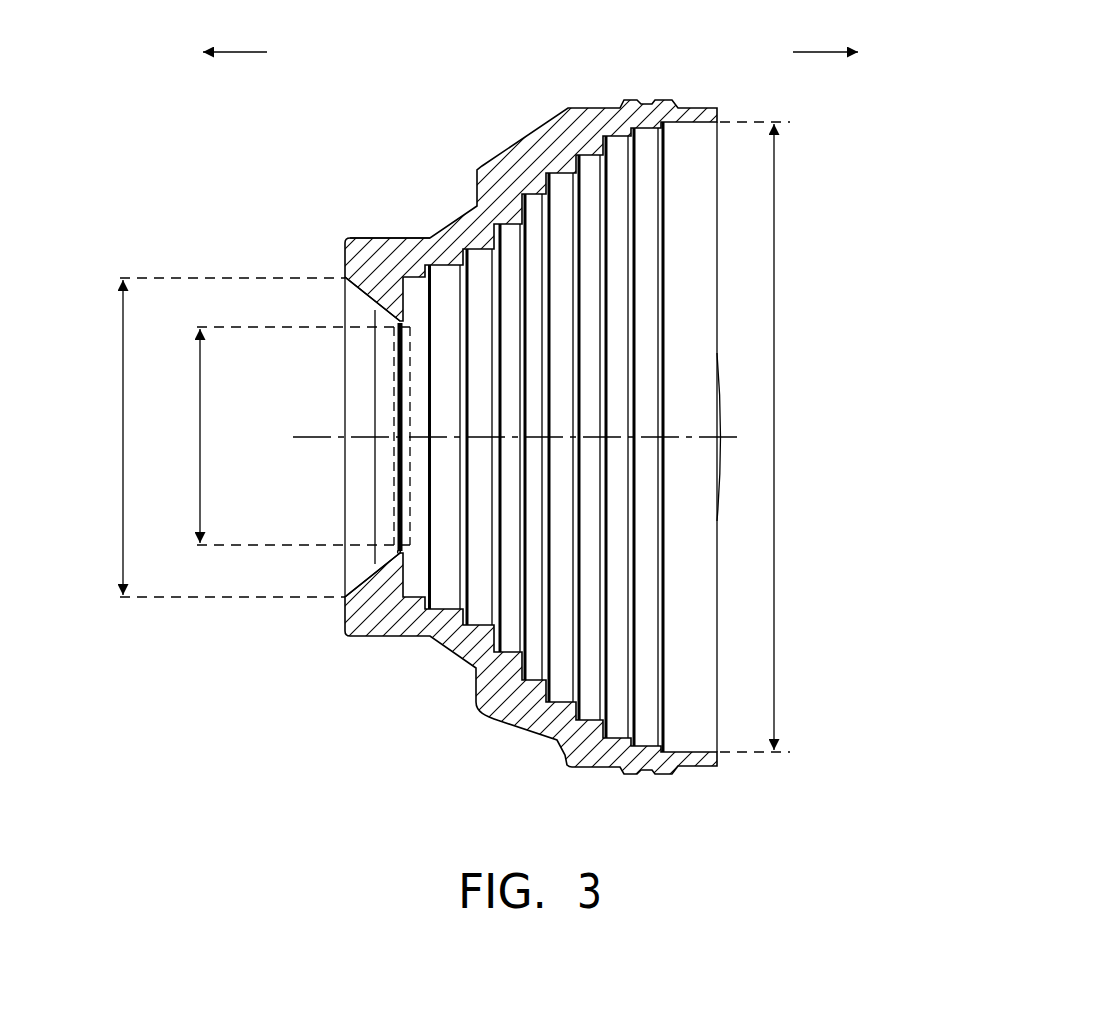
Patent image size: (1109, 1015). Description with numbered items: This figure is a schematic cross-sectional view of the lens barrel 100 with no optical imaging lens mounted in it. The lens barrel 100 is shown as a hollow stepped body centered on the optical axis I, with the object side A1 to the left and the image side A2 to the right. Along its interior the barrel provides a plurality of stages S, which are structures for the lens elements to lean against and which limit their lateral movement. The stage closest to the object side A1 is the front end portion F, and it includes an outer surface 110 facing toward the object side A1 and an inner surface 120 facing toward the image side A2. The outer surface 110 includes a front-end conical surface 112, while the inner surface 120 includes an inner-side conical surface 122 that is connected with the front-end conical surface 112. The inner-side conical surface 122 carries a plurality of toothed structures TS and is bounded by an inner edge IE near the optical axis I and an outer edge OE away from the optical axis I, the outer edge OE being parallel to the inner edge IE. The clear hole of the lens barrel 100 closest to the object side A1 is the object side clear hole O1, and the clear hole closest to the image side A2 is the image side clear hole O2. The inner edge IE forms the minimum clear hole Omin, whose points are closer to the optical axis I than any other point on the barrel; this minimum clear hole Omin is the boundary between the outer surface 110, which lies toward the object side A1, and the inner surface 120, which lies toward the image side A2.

The lens barrel 100 is at (821, 819).
The outer surface 110 is at (362, 297).
The front-end conical surface 112 is at (391, 320).
The inner surface 120 is at (406, 299).
The inner-side conical surface 122 is at (400, 323).
The stages S is at (415, 278).
The front end portion F is at (357, 238).
The optical axis I is at (313, 440).
The inner edge IE is at (397, 546).
The outer edge OE is at (397, 554).
The toothed structures TS is at (406, 548).
The object side clear hole O1 is at (216, 437).
The minimum clear hole Omin is at (278, 436).
The image side clear hole O2 is at (770, 437).
The object side A1 is at (235, 31).
The image side A2 is at (825, 31).